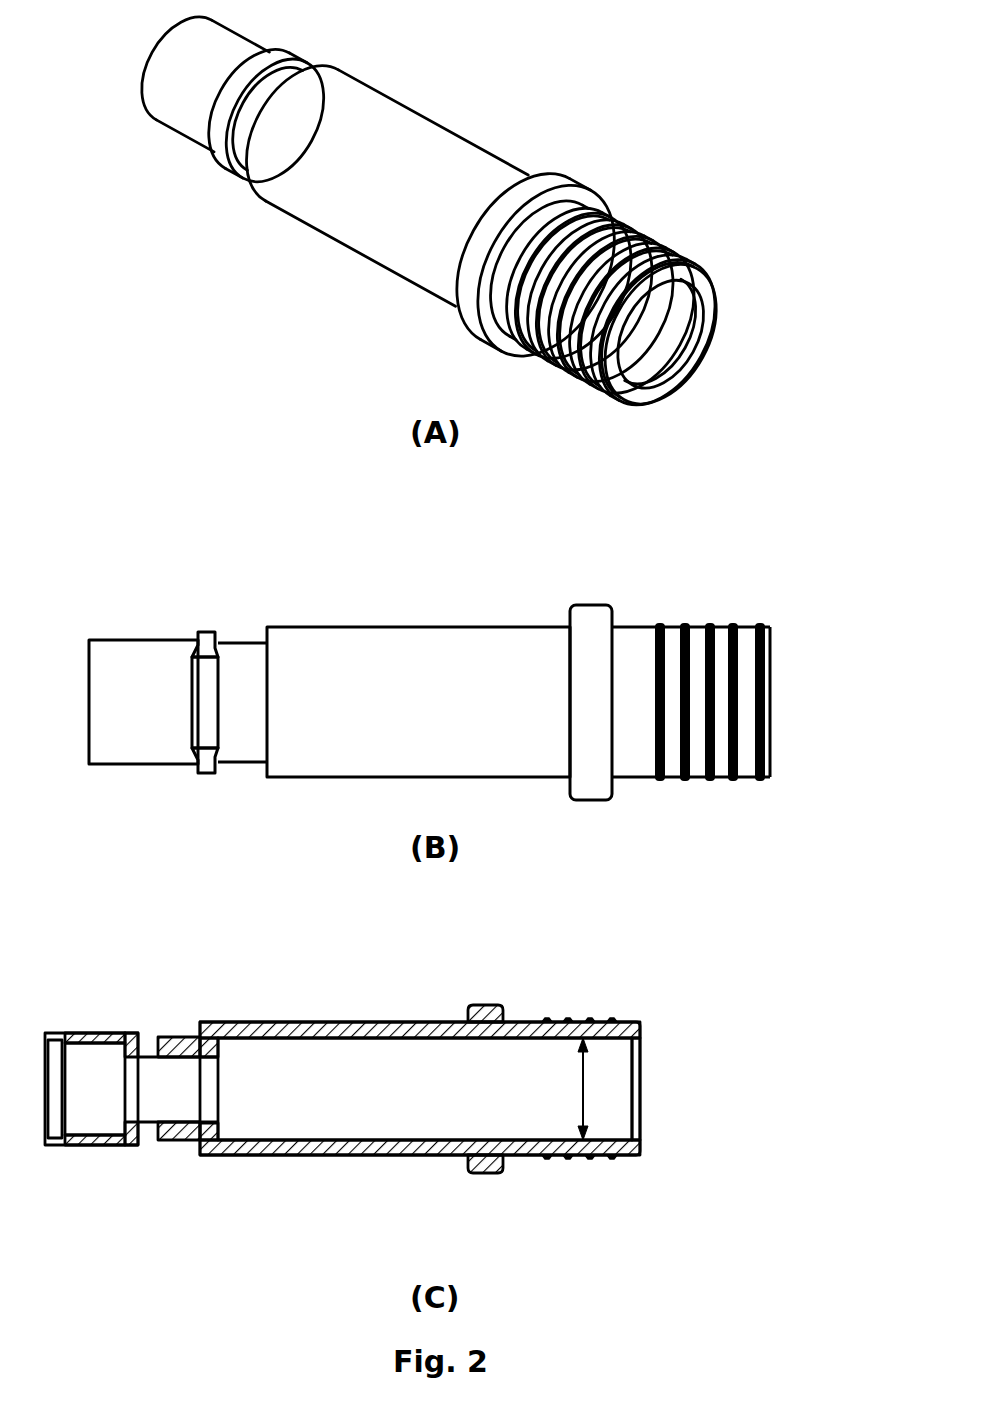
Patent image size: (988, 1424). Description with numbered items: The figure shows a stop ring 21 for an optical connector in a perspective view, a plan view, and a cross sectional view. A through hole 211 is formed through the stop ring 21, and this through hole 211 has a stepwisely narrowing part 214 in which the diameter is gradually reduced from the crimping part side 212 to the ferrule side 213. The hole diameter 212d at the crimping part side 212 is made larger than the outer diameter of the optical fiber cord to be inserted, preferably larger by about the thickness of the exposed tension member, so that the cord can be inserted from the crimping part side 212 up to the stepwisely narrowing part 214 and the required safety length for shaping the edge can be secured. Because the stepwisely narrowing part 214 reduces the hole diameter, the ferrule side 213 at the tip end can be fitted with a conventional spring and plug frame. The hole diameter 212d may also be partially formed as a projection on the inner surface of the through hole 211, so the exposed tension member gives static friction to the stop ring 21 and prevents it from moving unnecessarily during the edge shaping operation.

The stop ring 21 is at (396, 100).
The through hole 211 is at (307, 1052).
The crimping part side 212 is at (587, 1025).
The hole diameter of the crimping part side 212d is at (583, 1088).
The ferrule side 213 is at (70, 1033).
The stepwisely narrowing part 214 is at (217, 1057).